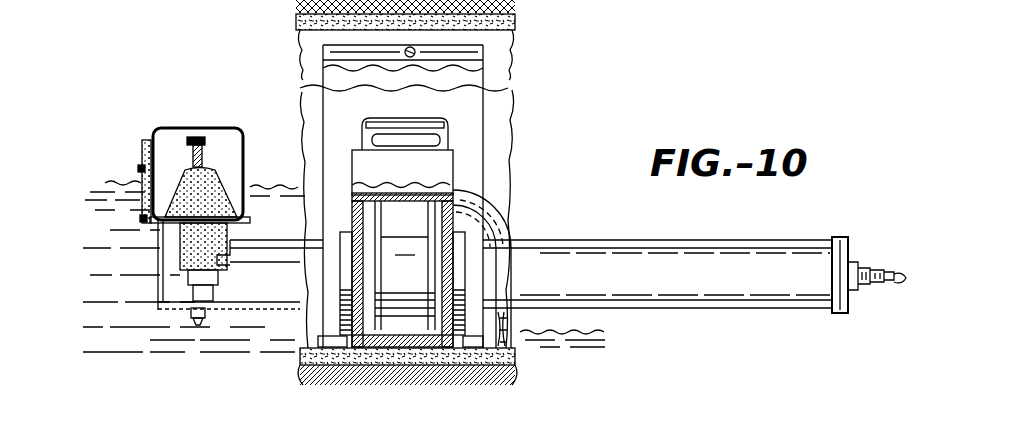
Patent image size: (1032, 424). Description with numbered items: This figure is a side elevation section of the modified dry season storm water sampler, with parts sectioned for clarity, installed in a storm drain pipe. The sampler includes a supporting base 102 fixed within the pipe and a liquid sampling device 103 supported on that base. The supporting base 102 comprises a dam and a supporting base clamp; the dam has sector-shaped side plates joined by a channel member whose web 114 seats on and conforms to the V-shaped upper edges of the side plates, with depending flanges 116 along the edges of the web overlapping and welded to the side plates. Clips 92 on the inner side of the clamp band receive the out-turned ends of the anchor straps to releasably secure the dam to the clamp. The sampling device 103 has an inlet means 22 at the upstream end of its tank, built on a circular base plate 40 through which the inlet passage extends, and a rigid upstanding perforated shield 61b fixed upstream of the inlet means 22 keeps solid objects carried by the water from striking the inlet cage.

The perforated shield 61b is at (151, 138).
The inlet means 22 is at (163, 180).
The circular base plate 40 is at (145, 200).
The depending flanges 116 is at (349, 197).
The web 114 is at (432, 178).
The supporting base 102 is at (338, 314).
The clips 92 is at (319, 366).
The liquid sampling device 103 is at (636, 310).